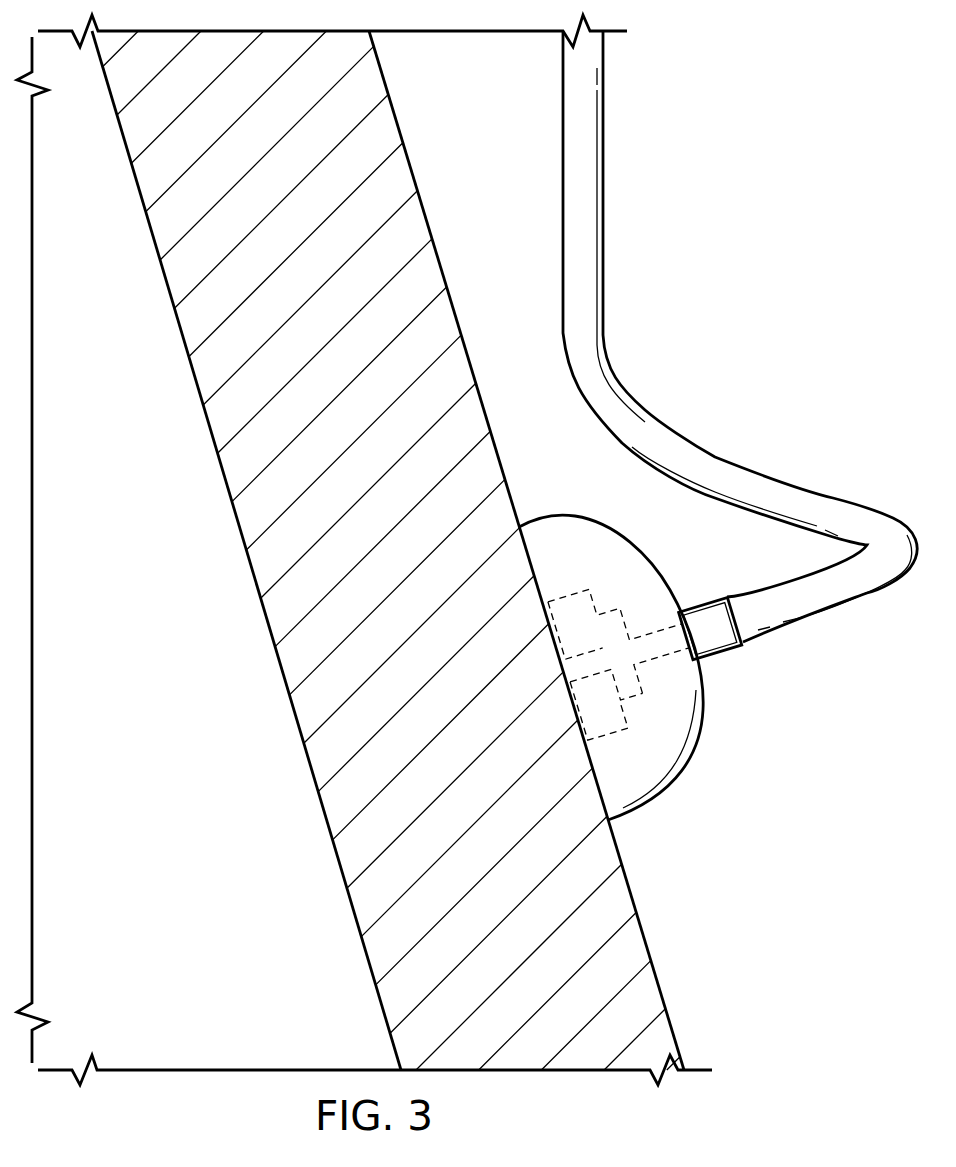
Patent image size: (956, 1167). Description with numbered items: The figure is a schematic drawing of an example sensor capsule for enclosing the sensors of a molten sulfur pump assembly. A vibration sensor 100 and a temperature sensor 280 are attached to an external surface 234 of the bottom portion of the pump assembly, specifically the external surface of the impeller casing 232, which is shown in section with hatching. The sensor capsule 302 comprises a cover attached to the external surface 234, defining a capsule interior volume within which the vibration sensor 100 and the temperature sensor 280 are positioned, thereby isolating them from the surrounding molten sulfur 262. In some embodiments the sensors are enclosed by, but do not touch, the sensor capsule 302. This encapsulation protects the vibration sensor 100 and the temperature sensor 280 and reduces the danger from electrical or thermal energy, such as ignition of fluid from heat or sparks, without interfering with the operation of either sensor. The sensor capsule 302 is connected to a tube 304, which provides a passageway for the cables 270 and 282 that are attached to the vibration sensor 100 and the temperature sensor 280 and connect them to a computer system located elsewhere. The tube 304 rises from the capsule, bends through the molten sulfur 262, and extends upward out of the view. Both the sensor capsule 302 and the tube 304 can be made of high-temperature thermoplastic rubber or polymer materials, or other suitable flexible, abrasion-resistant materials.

The vibration sensor 100 is at (570, 596).
The impeller casing 232 is at (277, 617).
The external surface 234 is at (645, 935).
The molten sulfur 262 is at (847, 851).
The cable 270 is at (660, 625).
The temperature sensor 280 is at (612, 730).
The cable 282 is at (653, 658).
The sensor capsule 302 is at (650, 805).
The tube 304 is at (603, 183).